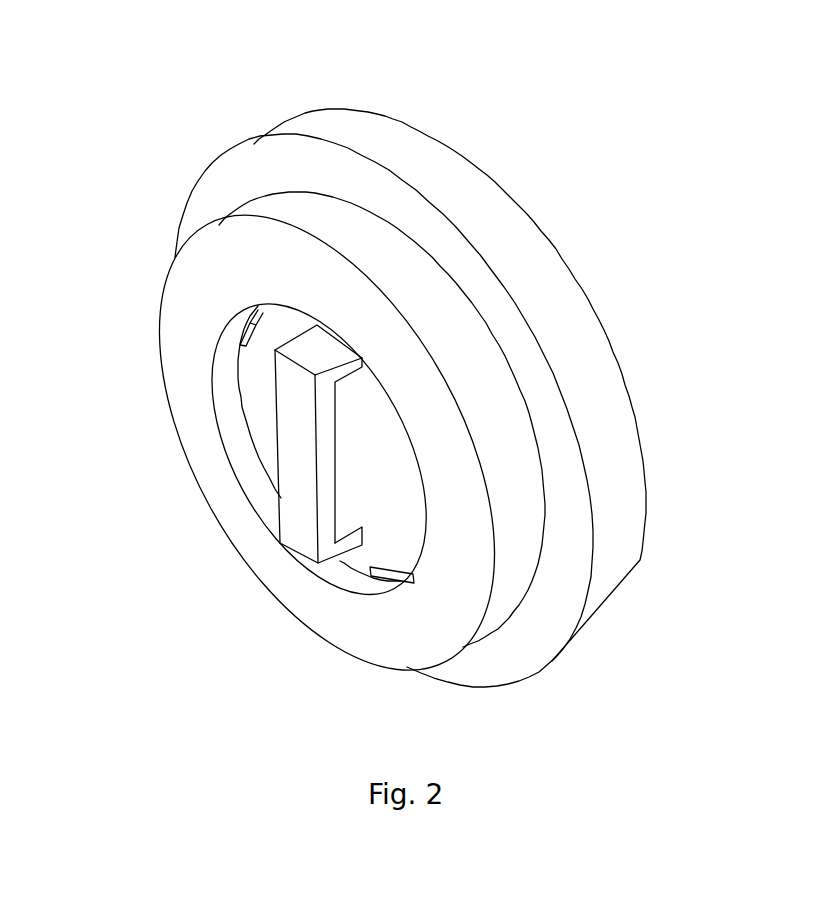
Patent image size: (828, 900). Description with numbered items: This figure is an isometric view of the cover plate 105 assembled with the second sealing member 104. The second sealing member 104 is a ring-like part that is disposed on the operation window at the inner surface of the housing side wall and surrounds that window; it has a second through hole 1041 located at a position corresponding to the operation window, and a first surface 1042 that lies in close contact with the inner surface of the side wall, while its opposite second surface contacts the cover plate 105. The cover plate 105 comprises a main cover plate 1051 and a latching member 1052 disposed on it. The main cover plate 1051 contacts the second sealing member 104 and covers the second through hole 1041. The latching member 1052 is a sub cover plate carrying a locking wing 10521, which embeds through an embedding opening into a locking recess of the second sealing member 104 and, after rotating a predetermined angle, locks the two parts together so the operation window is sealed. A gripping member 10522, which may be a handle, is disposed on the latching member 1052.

The second sealing member 104 is at (316, 442).
The second through hole 1041 is at (217, 406).
The first surface 1042 is at (173, 363).
The cover plate 105 is at (384, 362).
The main cover plate 1051 is at (432, 138).
The latching member 1052 is at (261, 520).
The locking wing 10521 is at (352, 565).
The gripping member 10522 is at (283, 465).